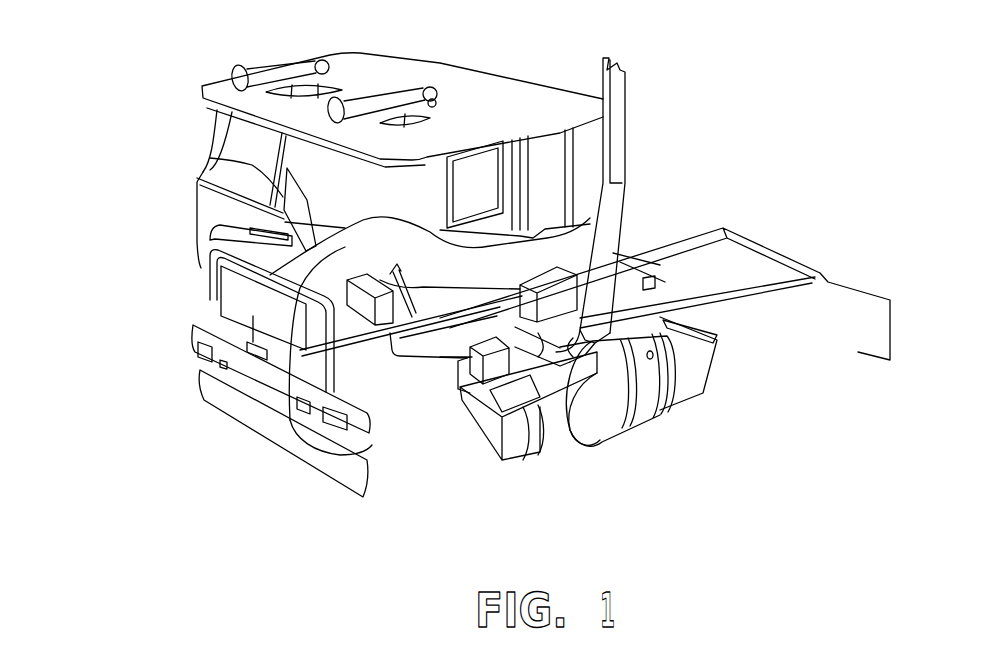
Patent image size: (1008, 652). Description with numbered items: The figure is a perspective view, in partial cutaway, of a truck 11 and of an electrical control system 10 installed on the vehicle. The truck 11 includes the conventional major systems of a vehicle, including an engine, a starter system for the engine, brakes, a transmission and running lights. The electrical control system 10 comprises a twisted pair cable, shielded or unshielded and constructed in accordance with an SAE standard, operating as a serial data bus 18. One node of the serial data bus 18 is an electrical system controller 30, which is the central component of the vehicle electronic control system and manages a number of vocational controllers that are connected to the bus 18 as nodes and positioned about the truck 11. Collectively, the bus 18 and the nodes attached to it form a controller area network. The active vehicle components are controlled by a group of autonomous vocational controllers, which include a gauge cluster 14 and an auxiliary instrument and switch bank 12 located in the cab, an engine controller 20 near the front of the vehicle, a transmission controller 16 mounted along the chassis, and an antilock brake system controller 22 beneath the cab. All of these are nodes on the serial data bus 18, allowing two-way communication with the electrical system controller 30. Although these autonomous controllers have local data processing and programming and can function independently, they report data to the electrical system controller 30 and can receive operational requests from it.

The electrical control system 10 is at (426, 424).
The truck 11 is at (517, 67).
The auxiliary instrument and switch bank 12 is at (210, 160).
The gauge cluster 14 is at (209, 241).
The transmission controller 16 is at (560, 398).
The serial data bus 18 is at (203, 289).
The engine controller 20 is at (338, 293).
The antilock brake system (ABS) controller 22 is at (470, 392).
The electrical system controller 30 is at (562, 272).